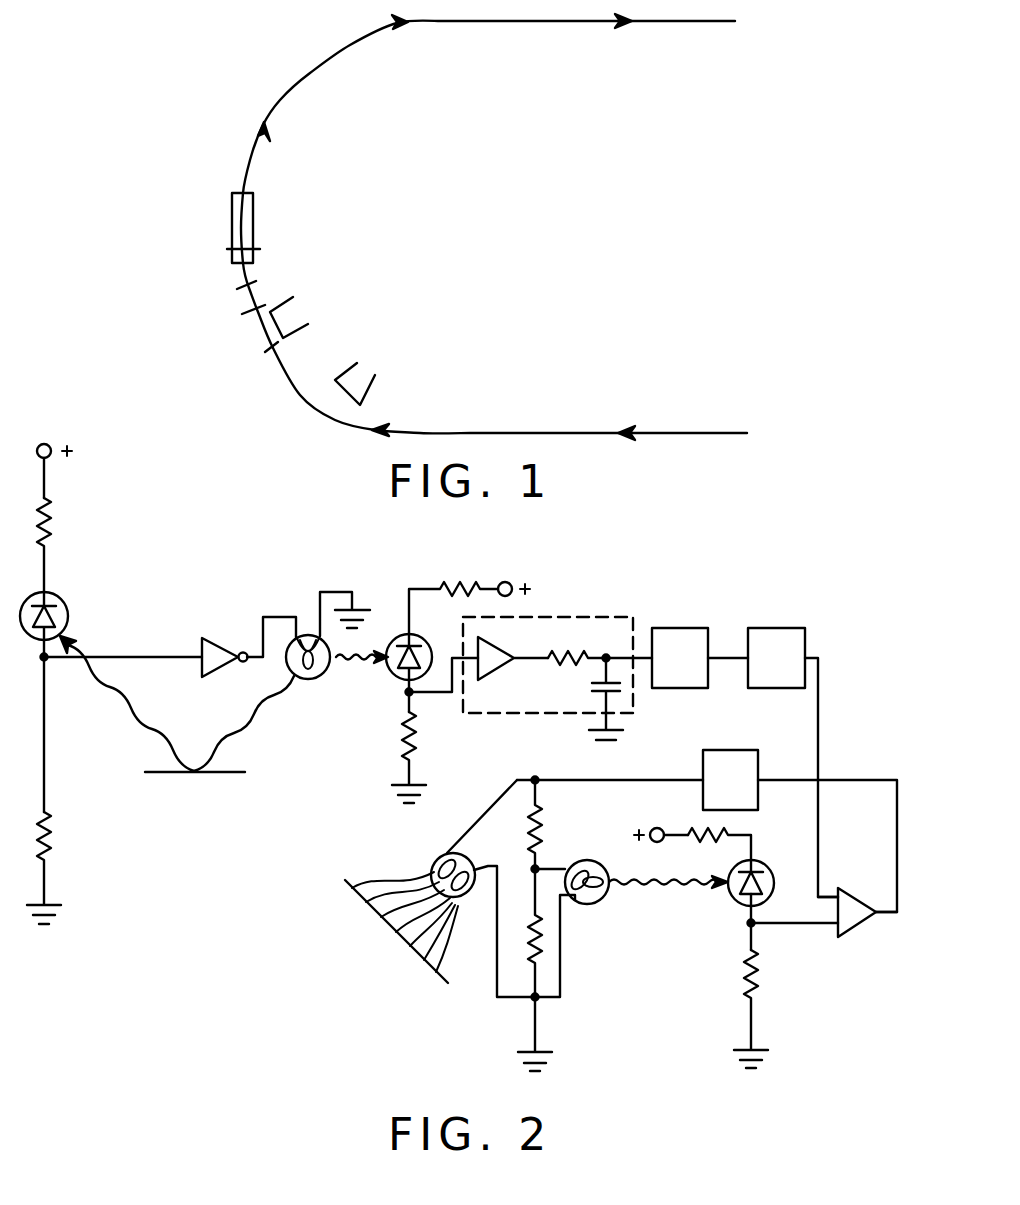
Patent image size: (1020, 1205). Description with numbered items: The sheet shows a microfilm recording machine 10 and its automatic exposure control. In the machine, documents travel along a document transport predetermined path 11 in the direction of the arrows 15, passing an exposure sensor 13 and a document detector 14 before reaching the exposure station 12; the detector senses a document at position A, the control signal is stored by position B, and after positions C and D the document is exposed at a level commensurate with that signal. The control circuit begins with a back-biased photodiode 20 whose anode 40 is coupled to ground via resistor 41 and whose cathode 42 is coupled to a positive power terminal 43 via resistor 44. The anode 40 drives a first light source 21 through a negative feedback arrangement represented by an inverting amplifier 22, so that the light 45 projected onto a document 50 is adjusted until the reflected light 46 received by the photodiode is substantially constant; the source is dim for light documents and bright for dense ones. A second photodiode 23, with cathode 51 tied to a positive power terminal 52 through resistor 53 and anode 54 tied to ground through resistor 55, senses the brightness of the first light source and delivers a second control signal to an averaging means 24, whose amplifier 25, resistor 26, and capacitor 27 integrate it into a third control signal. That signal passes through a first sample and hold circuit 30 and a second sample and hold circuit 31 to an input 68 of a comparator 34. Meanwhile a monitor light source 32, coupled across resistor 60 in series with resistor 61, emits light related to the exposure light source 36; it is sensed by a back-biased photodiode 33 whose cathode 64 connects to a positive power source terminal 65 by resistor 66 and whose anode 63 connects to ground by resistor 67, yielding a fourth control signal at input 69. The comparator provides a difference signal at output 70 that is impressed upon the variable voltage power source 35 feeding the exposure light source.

In FIG. 1, the microfilm recording machine 10 is at (635, 245).
In FIG. 1, the document transport predetermined path 11 is at (310, 74).
In FIG. 1, the exposure station 12 is at (253, 220).
In FIG. 1, the exposure sensor 13 is at (372, 382).
In FIG. 1, the document detector 14 is at (308, 328).
In FIG. 1, the arrows 15 is at (408, 30).
In FIG. 2, the photodiode 20 is at (68, 616).
In FIG. 2, the first light source 21 is at (310, 622).
In FIG. 2, the inverting amplifier 22 is at (210, 640).
In FIG. 2, the second photodiode 23 is at (422, 640).
In FIG. 2, the averaging means 24 is at (553, 616).
In FIG. 2, the amplifier 25 is at (492, 655).
In FIG. 2, the resistor 26 is at (574, 652).
In FIG. 2, the capacitor 27 is at (592, 706).
In FIG. 2, the first sample and hold circuit 30 is at (678, 634).
In FIG. 2, the second sample and hold circuit 31 is at (773, 634).
In FIG. 2, the monitor light source 32 is at (614, 864).
In FIG. 2, the monitor photodiode 33 is at (770, 872).
In FIG. 2, the comparator 34 is at (850, 905).
In FIG. 2, the variable voltage power source 35 is at (730, 757).
In FIG. 2, the exposure light source 36 is at (446, 851).
In FIG. 2, the anode 40 is at (42, 636).
In FIG. 2, the resistor 41 is at (51, 836).
In FIG. 2, the cathode 42 is at (58, 600).
In FIG. 2, the positive power terminal 43 is at (50, 460).
In FIG. 2, the resistor 44 is at (51, 522).
In FIG. 2, the projected light 45 is at (258, 712).
In FIG. 2, the reflected light 46 is at (146, 713).
In FIG. 2, the document 50 is at (200, 774).
In FIG. 2, the cathode 51 is at (398, 652).
In FIG. 2, the positive power terminal 52 is at (508, 582).
In FIG. 2, the resistor 53 is at (458, 594).
In FIG. 2, the anode 54 is at (406, 681).
In FIG. 2, the resistor 55 is at (418, 728).
In FIG. 2, the resistor 60 is at (532, 938).
In FIG. 2, the resistor 61 is at (545, 830).
In FIG. 2, the anode 63 is at (740, 924).
In FIG. 2, the cathode 64 is at (740, 872).
In FIG. 2, the positive power source terminal 65 is at (659, 828).
In FIG. 2, the resistor 66 is at (716, 830).
In FIG. 2, the resistor 67 is at (742, 980).
In FIG. 2, the comparator input 68 is at (830, 892).
In FIG. 2, the comparator input 69 is at (836, 926).
In FIG. 2, the comparator output 70 is at (880, 918).